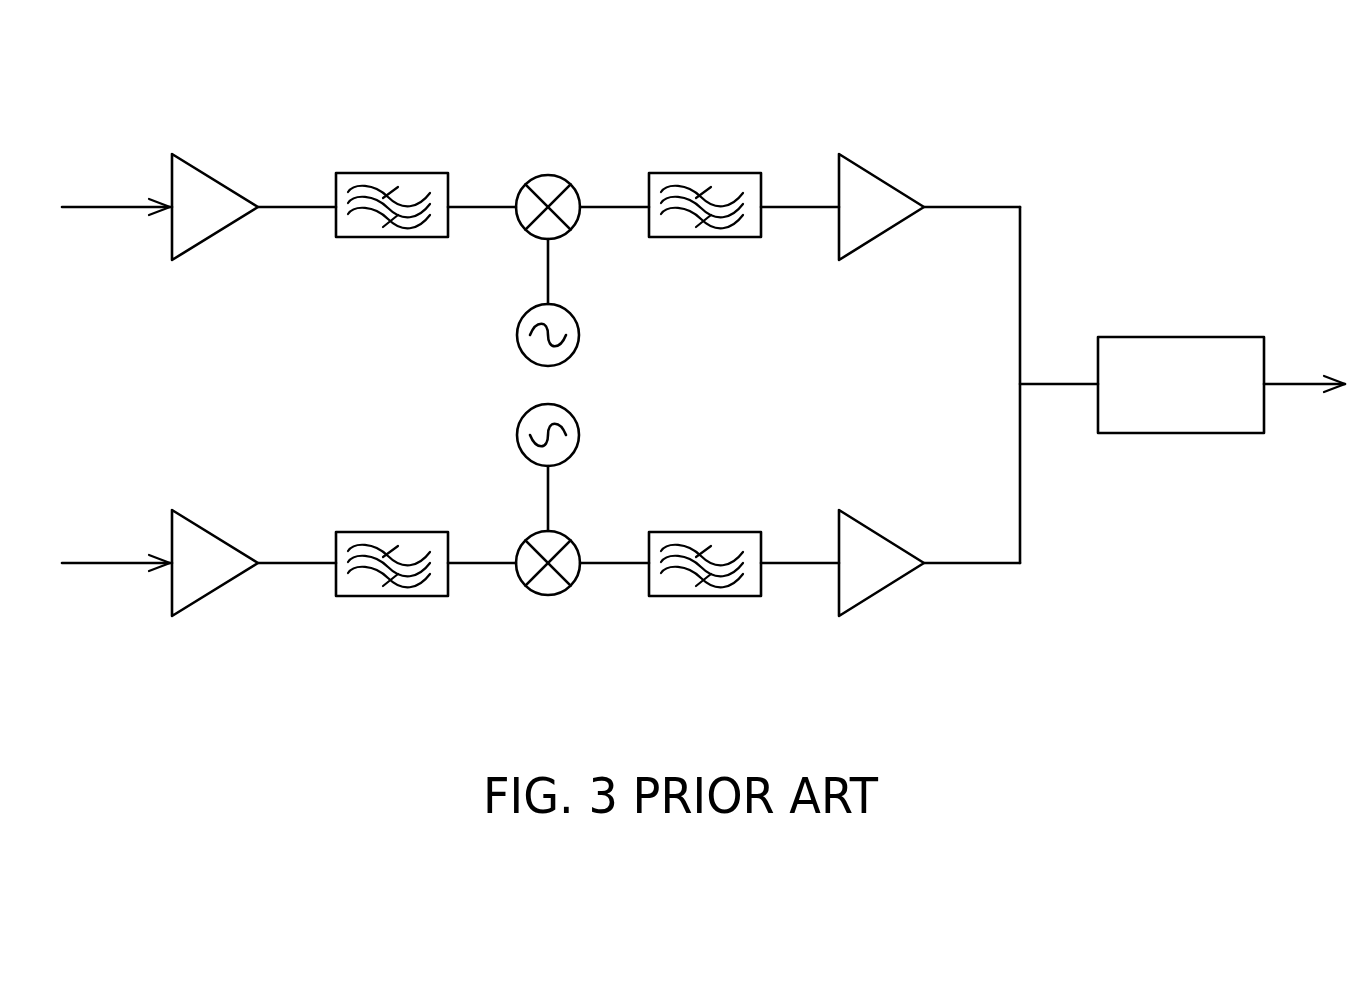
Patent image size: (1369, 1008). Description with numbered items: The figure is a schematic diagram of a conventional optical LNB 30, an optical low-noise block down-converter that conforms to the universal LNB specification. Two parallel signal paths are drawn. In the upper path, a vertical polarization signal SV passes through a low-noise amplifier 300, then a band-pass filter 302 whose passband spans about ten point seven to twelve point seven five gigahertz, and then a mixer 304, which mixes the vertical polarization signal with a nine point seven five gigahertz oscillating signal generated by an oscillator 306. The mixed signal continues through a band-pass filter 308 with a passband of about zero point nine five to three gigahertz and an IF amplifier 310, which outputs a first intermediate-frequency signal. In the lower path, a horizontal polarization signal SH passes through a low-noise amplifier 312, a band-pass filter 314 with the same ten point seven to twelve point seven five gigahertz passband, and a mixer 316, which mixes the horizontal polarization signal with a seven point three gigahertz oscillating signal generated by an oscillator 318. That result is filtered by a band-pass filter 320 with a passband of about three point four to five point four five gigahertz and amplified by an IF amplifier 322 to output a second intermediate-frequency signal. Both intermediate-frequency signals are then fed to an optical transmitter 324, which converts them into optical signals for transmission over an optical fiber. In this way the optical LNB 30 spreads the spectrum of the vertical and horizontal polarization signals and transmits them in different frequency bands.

The optical LNB 30 is at (1143, 125).
The low-noise amplifier 300 is at (217, 172).
The band-pass filter 302 is at (393, 173).
The mixer 304 is at (548, 174).
The oscillator 306 is at (516, 335).
The band-pass filter 308 is at (705, 173).
The IF amplifier 310 is at (884, 172).
The low-noise amplifier 312 is at (217, 592).
The band-pass filter 314 is at (393, 597).
The mixer 316 is at (548, 596).
The oscillator 318 is at (516, 437).
The band-pass filter 320 is at (705, 597).
The IF amplifier 322 is at (882, 592).
The optical transmitter 324 is at (1182, 337).